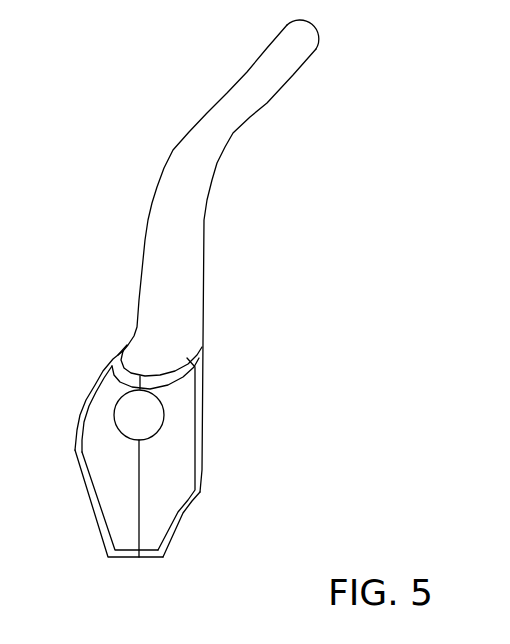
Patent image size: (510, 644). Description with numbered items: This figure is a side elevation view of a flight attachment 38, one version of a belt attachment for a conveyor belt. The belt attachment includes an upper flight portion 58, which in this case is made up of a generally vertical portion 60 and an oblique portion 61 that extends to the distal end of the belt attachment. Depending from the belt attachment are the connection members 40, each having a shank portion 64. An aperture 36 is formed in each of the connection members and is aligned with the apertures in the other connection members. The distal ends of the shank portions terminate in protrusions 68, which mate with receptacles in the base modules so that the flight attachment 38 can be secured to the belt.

The flight attachment 38 is at (115, 76).
The upper flight portion 58 is at (157, 197).
The vertical portion 60 is at (198, 240).
The oblique portion 61 is at (285, 68).
The shank portion 64 is at (92, 420).
The protrusion 68 is at (122, 532).
The connection member 40 is at (160, 537).
The aperture 36 is at (155, 417).